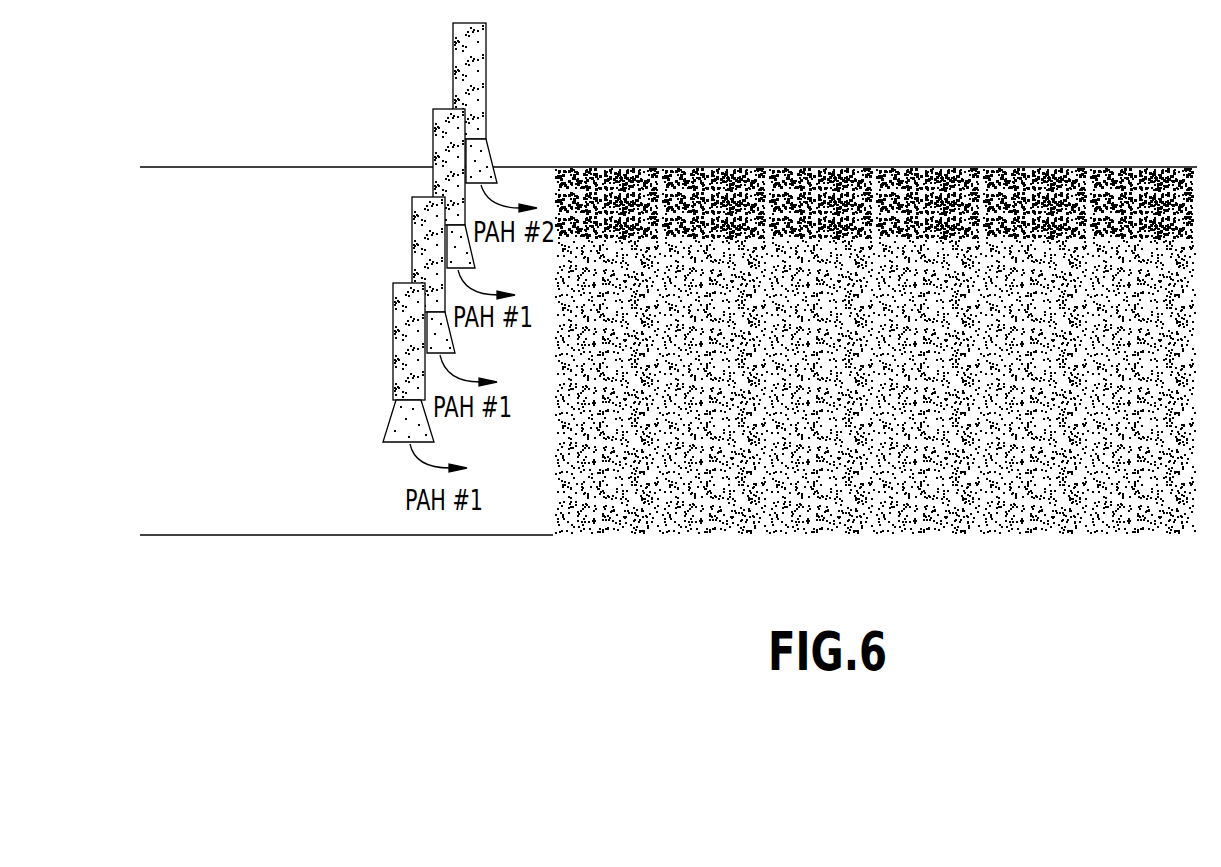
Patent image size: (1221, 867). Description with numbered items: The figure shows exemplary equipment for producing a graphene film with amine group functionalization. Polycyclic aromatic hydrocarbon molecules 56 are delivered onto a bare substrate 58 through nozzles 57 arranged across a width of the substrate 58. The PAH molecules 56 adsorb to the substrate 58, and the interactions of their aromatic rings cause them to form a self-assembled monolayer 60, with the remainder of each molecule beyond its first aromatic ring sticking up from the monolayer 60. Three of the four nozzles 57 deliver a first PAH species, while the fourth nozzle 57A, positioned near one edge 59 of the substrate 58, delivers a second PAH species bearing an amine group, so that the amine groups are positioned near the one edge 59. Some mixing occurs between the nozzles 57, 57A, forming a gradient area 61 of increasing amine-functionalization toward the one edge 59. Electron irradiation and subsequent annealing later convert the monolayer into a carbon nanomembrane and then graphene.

The polycyclic aromatic hydrocarbon (PAH) molecules 56 is at (410, 452).
The nozzles 57 is at (433, 182).
The fourth nozzle 57A is at (455, 63).
The substrate 58 is at (269, 420).
The one edge 59 is at (560, 115).
The self-assembled monolayer (SAM) 60 is at (862, 502).
The gradient area 61 is at (785, 270).